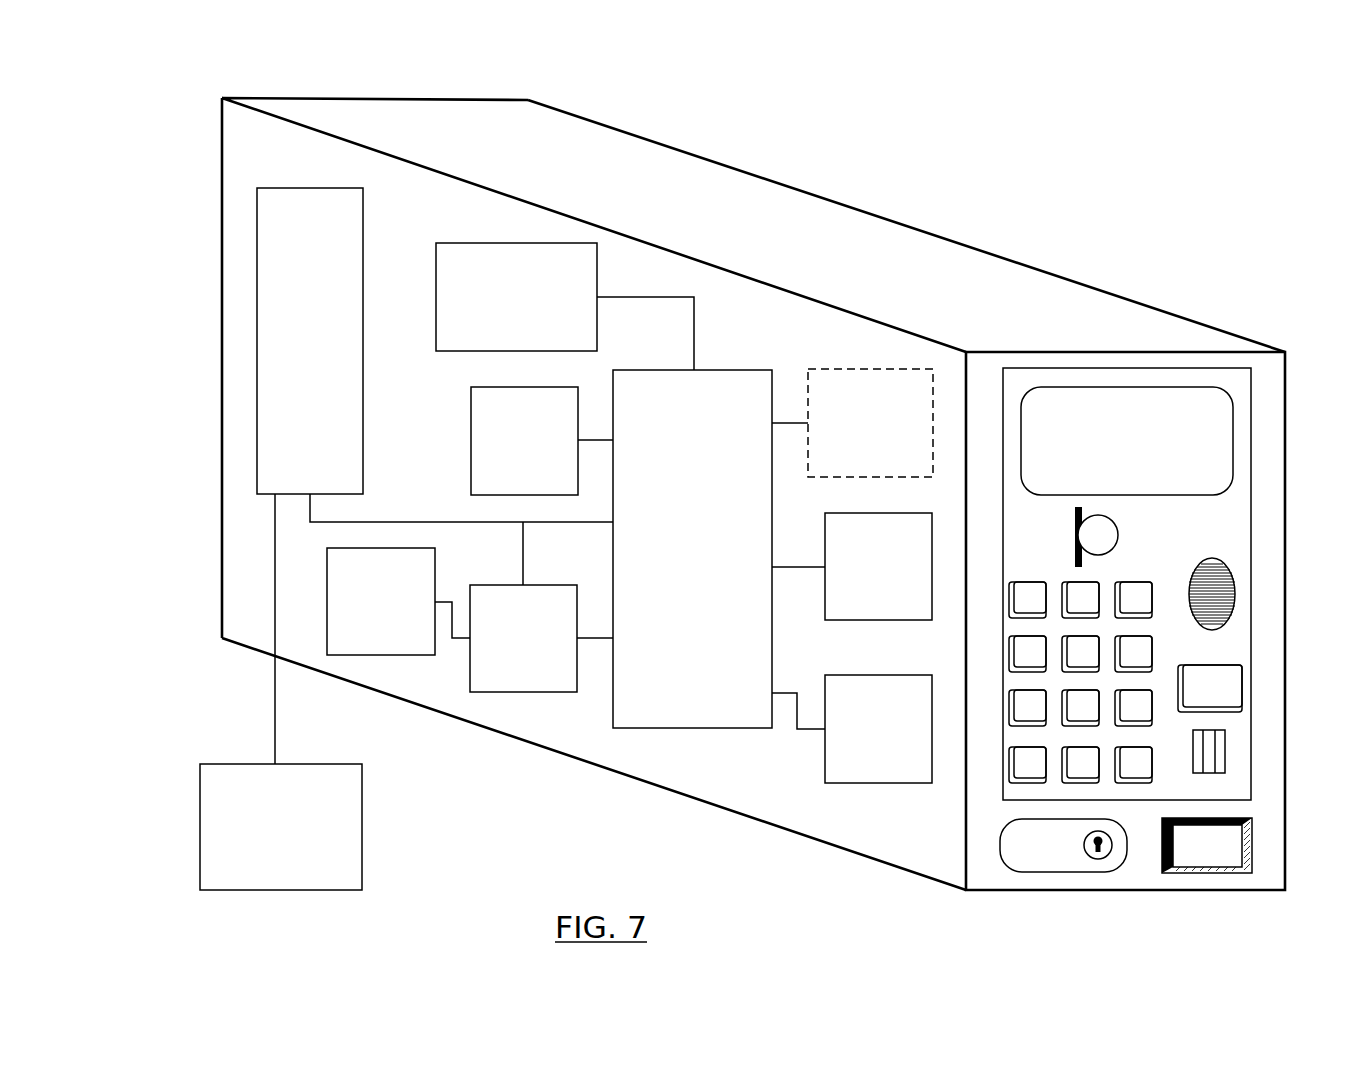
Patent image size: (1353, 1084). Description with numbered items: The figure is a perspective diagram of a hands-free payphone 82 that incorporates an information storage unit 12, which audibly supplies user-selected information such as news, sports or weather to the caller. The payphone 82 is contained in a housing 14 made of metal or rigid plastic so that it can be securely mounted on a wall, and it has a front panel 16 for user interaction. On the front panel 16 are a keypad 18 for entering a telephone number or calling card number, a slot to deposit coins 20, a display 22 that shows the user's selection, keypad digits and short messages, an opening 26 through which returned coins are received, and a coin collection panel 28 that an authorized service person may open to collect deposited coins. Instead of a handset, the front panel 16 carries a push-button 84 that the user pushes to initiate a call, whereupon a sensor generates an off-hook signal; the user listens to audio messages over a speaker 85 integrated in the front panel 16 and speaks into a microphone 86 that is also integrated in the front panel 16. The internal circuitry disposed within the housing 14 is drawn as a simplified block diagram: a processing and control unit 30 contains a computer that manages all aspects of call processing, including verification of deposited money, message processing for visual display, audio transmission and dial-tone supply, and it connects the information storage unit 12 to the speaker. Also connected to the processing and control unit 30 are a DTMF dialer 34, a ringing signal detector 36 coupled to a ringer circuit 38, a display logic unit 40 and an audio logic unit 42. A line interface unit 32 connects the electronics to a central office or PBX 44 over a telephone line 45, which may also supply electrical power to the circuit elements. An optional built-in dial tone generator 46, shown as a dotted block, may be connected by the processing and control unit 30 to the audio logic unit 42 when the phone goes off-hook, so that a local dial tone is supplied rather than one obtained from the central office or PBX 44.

The information storage unit 12 is at (517, 243).
The housing 14 is at (720, 188).
The front panel 16 is at (1282, 522).
The keypad 18 is at (1012, 677).
The slot to deposit coins 20 is at (1030, 530).
The display 22 is at (1127, 387).
The opening for returned coins 26 is at (1213, 873).
The coin collection panel 28 is at (1063, 873).
The processing and control unit 30 is at (690, 728).
The line interface unit 32 is at (257, 343).
The DTMF dialer 34 is at (471, 405).
The ringing signal detector 36 is at (523, 692).
The ringer circuit 38 is at (380, 655).
The display logic unit 40 is at (842, 620).
The audio logic unit 42 is at (842, 783).
The central office or PBX 44 is at (362, 827).
The telephone line 45 is at (270, 692).
The dial tone generator 46 is at (870, 369).
The hands-free payphone 82 is at (968, 243).
The push-button 84 is at (1242, 687).
The speaker 85 is at (1235, 593).
The microphone 86 is at (1225, 753).